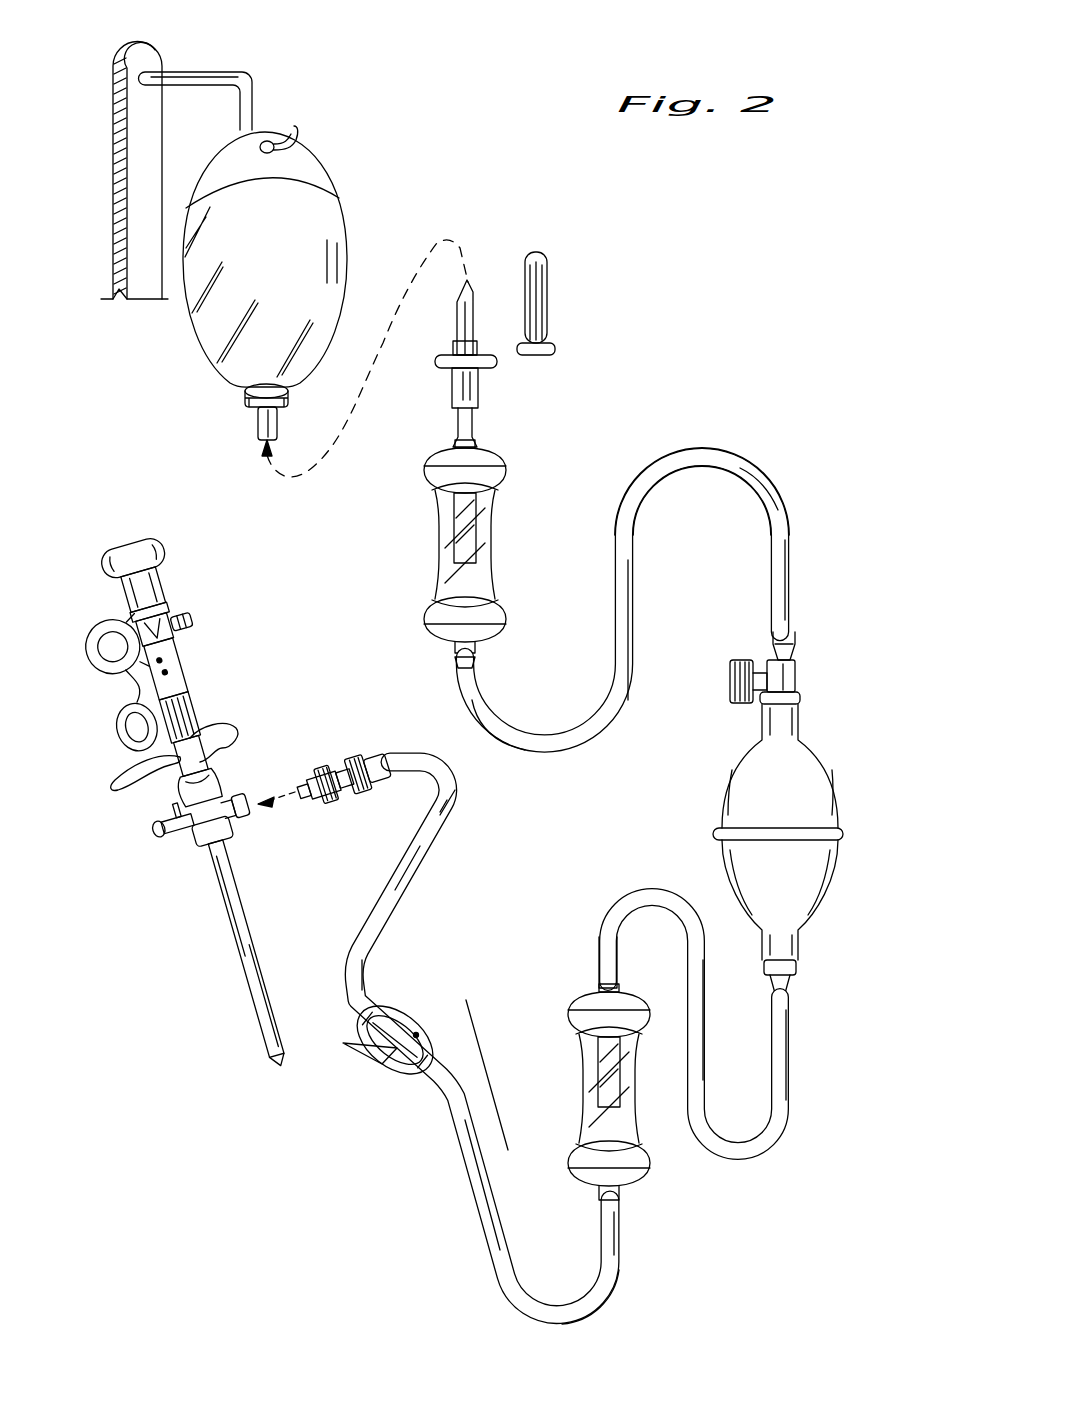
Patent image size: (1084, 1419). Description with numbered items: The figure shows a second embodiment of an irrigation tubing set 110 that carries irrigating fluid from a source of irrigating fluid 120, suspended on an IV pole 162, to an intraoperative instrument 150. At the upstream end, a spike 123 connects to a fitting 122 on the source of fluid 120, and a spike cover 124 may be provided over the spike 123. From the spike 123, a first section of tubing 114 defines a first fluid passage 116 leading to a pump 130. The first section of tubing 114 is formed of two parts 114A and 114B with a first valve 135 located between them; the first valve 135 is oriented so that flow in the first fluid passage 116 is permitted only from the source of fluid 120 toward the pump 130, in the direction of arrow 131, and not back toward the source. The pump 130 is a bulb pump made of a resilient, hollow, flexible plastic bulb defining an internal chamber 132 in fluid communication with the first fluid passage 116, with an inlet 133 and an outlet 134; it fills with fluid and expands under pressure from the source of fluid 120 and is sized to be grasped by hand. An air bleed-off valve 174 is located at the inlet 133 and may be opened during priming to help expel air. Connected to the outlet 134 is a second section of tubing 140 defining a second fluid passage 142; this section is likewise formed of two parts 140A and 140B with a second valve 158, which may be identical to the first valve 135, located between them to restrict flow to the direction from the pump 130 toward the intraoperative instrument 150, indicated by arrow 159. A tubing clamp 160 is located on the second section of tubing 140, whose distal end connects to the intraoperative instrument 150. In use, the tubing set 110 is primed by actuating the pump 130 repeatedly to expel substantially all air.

The irrigation tubing set 110 is at (825, 427).
The first section of tubing 114 is at (630, 700).
The first part of first tubing section 114A is at (468, 425).
The second part of first tubing section 114B is at (471, 664).
The first fluid passage 116 is at (700, 452).
The source of irrigating fluid 120 is at (333, 181).
The fitting on source of fluid 122 is at (258, 422).
The spike 123 is at (470, 290).
The spike cover 124 is at (548, 290).
The pump 130 is at (815, 760).
The arrow 131 is at (578, 780).
The internal chamber 132 is at (838, 805).
The inlet 133 is at (796, 690).
The outlet 134 is at (793, 977).
The first valve 135 is at (440, 575).
The second section of tubing 140 is at (497, 1277).
The first part of second tubing section 140A is at (598, 1218).
The second part of second tubing section 140B is at (600, 938).
The second fluid passage 142 is at (589, 1308).
The intraoperative instrument 150 is at (146, 805).
The second valve 158 is at (645, 1175).
The arrow 159 is at (450, 1156).
The tubing clamp 160 is at (398, 1082).
The IV pole 162 is at (157, 56).
The air bleed-off valve 174 is at (737, 672).